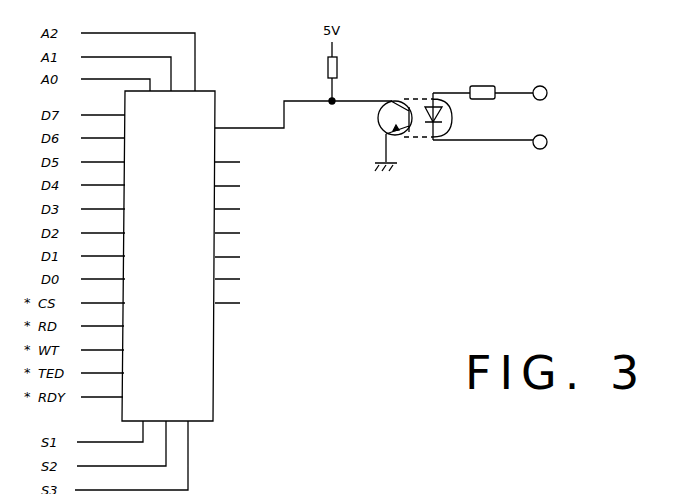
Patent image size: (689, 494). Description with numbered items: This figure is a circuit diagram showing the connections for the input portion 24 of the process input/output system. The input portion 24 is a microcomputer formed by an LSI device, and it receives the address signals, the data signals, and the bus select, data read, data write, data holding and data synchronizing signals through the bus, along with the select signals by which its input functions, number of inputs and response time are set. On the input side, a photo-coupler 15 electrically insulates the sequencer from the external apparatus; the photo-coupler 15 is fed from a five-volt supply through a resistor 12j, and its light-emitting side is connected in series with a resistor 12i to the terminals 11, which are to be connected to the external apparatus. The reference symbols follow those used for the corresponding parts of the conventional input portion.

The input portion 24 is at (214, 343).
The resistor 12j is at (338, 66).
The resistor 12i is at (493, 83).
The photo-coupler 15 is at (383, 117).
The terminals 11 is at (547, 90).